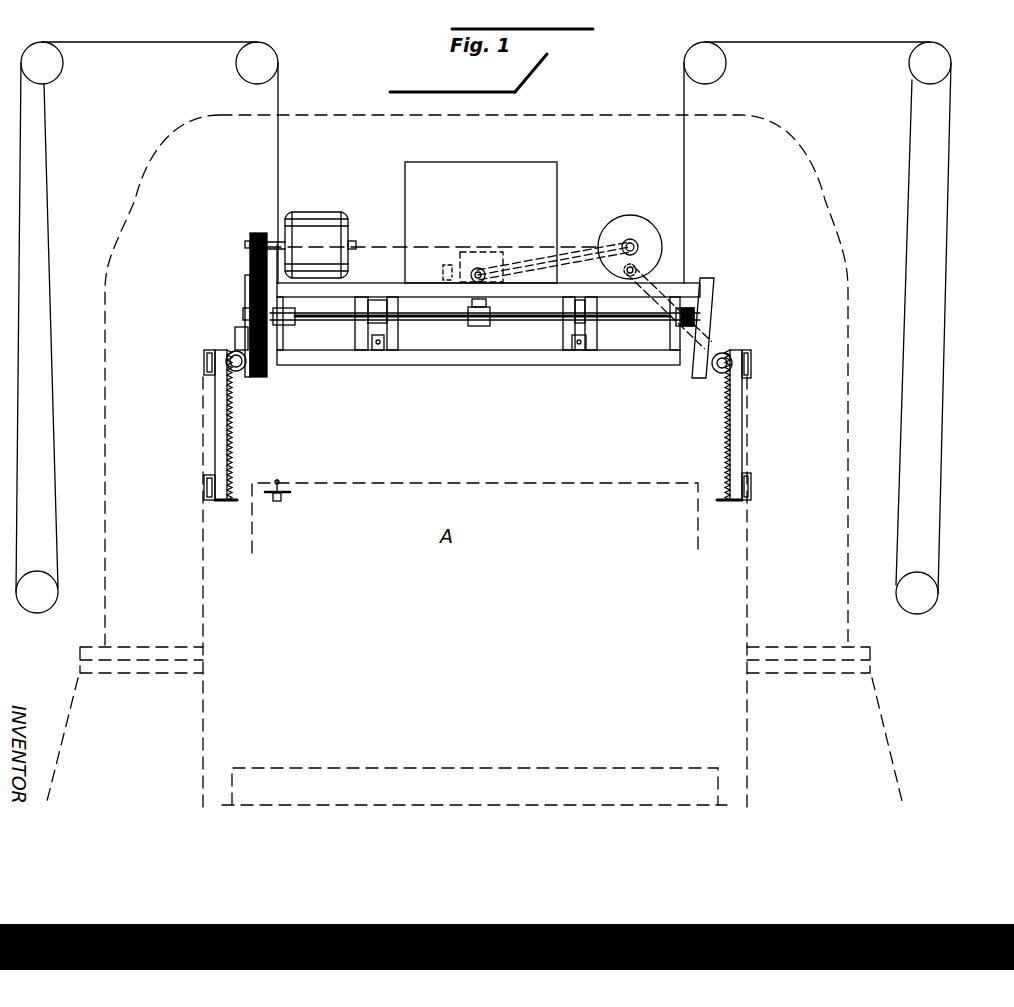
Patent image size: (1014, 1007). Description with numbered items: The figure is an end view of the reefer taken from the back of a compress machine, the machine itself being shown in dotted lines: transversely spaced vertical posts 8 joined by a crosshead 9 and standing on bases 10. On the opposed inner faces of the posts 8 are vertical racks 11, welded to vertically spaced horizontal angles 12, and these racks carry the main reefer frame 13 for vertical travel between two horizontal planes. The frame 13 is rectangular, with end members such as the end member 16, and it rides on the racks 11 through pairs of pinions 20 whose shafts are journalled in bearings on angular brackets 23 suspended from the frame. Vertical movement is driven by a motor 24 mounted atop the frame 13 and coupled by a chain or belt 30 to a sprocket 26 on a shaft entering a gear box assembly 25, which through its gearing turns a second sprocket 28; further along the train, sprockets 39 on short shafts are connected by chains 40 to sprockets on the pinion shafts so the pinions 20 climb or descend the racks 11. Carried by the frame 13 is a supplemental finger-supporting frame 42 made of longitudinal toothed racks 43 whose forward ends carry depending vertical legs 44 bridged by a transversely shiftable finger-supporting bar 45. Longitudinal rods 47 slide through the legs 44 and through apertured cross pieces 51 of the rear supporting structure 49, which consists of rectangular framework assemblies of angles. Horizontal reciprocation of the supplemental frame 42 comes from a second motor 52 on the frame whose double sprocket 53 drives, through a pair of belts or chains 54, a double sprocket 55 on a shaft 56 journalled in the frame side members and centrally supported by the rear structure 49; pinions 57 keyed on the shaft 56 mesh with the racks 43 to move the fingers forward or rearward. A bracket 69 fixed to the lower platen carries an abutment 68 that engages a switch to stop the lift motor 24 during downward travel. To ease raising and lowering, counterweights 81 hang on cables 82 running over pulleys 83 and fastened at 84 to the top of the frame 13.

The vertical posts 8 is at (105, 428).
The crosshead 9 is at (318, 118).
The bases 10 is at (84, 696).
The vertical racks 11 is at (227, 425).
The horizontal angles 12 is at (204, 355).
The main reefer frame 13 is at (708, 280).
The end member 16 is at (408, 290).
The pinions 20 is at (242, 371).
The angular brackets 23 is at (720, 320).
The motor 24 is at (633, 218).
The gear box assembly 25 is at (480, 254).
The sprocket 26 is at (485, 270).
The second sprocket 28 is at (448, 264).
The chain or belt 30 is at (560, 250).
The sprockets 39 is at (638, 272).
The chains 40 is at (658, 302).
The supplemental finger-supporting frame 42 is at (492, 349).
The toothed racks 43 is at (372, 296).
The vertical legs 44 is at (284, 344).
The finger-supporting bar 45 is at (605, 357).
The rods 47 is at (384, 350).
The rear supporting structure 49 is at (398, 336).
The cross pieces 51 is at (372, 354).
The second motor 52 is at (310, 213).
The double sprocket 53 is at (250, 240).
The belts or chains 54 is at (250, 262).
The double sprocket or pulley 55 is at (248, 293).
The shaft 56 is at (470, 327).
The pinion 57 is at (387, 306).
The abutment 68 is at (278, 482).
The bracket 69 is at (288, 492).
The weights 81 is at (40, 612).
The cables 82 is at (946, 312).
The pulleys 83 is at (726, 65).
The connection 84 is at (690, 284).